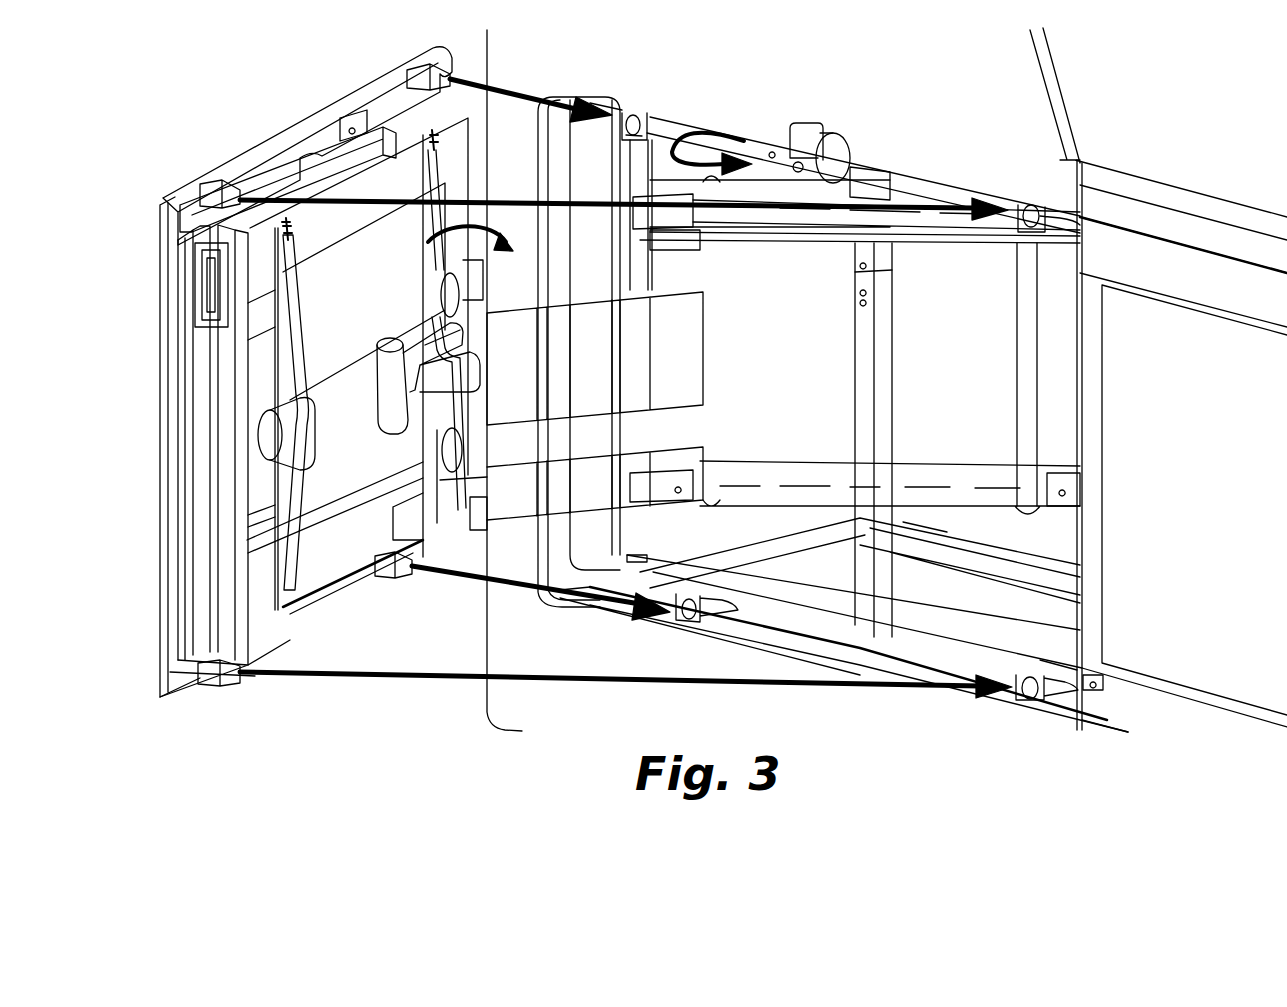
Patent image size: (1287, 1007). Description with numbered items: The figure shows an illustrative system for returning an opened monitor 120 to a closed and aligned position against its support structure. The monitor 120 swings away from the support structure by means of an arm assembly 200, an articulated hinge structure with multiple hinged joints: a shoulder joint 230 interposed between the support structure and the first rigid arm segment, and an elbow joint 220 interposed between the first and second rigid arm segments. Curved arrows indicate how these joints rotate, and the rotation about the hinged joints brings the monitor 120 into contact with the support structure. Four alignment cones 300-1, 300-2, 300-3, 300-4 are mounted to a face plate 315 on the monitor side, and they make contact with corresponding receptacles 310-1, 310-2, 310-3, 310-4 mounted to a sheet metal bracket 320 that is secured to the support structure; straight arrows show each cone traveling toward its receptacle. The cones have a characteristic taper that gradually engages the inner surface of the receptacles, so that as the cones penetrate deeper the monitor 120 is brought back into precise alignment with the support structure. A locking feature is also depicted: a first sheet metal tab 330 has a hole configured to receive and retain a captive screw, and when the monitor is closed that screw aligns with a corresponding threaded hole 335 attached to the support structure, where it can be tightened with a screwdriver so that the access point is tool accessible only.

The monitor 120 is at (210, 128).
The face plate 315 is at (168, 230).
The first sheet metal tab 330 is at (358, 132).
The elbow joint 220 is at (468, 284).
The arm assembly 200 is at (712, 335).
The shoulder joint 230 is at (722, 238).
The threaded hole 335 is at (800, 158).
The sheet metal bracket 320 is at (840, 648).
The alignment cone 300-1 is at (218, 690).
The alignment cone 300-2 is at (400, 580).
The alignment cone 300-3 is at (205, 187).
The alignment cone 300-4 is at (410, 73).
The receptacle 310-1 is at (1025, 703).
The receptacle 310-2 is at (688, 625).
The receptacle 310-3 is at (1025, 205).
The receptacle 310-4 is at (630, 108).